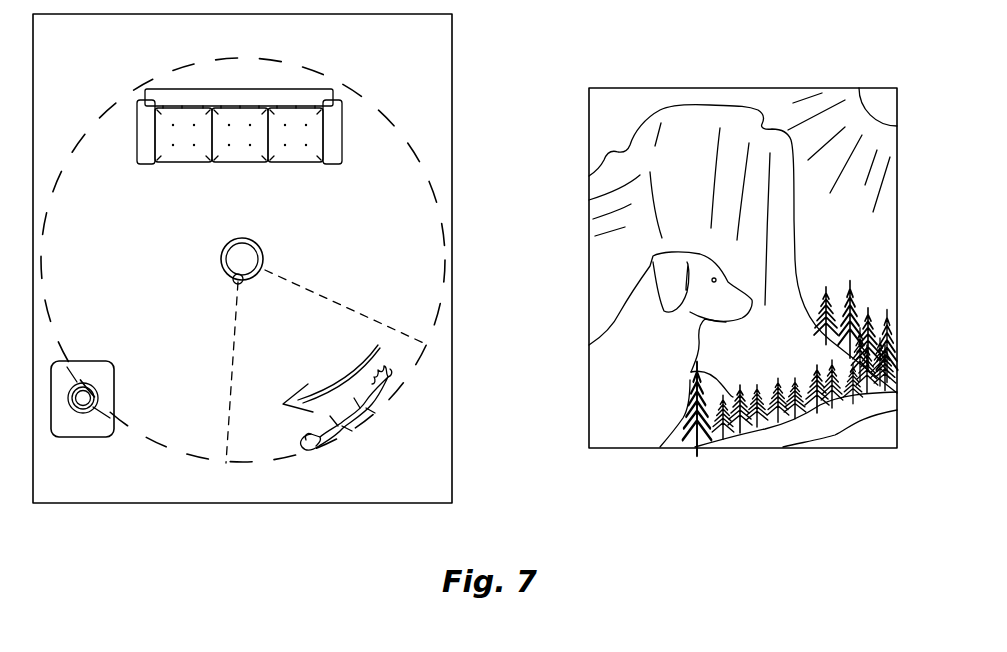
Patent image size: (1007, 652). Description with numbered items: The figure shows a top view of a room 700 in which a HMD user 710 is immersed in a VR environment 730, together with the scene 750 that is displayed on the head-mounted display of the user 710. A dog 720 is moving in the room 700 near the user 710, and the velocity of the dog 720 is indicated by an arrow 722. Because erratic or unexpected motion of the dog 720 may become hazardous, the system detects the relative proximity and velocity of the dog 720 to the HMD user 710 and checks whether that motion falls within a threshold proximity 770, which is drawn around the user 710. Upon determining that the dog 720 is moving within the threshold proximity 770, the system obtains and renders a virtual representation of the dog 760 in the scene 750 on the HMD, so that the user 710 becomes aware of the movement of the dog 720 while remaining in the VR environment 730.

The room 700 is at (452, 157).
The HMD user 710 is at (221, 258).
The dog 720 is at (357, 413).
The arrow 722 is at (287, 395).
The VR environment 730 is at (842, 249).
The scene 750 is at (778, 88).
The virtual representation of the dog 760 is at (611, 397).
The threshold proximity 770 is at (357, 97).